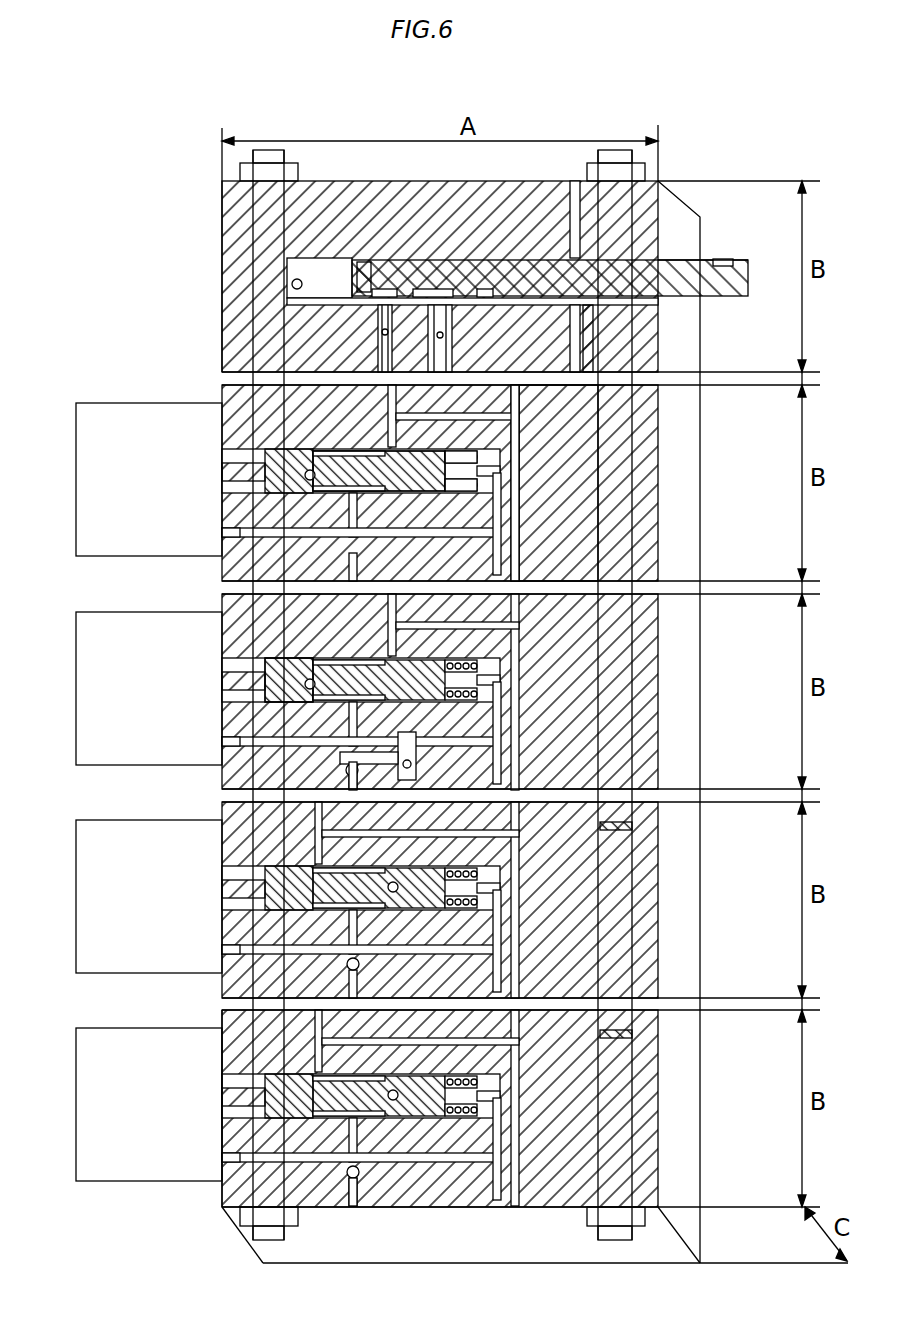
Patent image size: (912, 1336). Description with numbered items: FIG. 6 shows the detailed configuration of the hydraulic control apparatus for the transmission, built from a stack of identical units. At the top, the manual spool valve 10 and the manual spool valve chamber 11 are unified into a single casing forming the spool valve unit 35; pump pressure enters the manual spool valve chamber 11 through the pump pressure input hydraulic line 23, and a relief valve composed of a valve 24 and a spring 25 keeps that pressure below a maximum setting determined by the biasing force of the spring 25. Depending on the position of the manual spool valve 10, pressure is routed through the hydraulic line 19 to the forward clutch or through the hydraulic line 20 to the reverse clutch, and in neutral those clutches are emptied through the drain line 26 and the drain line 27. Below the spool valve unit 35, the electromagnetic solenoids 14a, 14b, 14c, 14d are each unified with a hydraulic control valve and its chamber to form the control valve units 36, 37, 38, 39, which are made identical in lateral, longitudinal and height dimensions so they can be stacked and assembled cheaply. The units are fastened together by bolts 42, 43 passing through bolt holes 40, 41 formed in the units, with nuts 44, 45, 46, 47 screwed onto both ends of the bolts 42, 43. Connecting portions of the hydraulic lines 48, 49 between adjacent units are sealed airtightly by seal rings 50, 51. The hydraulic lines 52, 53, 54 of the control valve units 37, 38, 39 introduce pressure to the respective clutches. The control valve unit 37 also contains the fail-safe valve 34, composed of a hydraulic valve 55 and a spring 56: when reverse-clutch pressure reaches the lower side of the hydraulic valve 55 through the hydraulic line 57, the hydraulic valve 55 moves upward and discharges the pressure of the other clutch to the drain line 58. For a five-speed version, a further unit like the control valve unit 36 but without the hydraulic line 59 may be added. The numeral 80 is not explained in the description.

The manual spool valve 10 is at (748, 283).
The manual spool valve chamber 11 is at (318, 256).
The electromagnetic solenoid 14a is at (100, 548).
The electromagnetic solenoid 14b is at (100, 755).
The electromagnetic solenoid 14c is at (100, 963).
The electromagnetic solenoid 14d is at (102, 1178).
The hydraulic line 19 is at (440, 350).
The hydraulic line 20 is at (428, 332).
The pump pressure input hydraulic line 23 is at (572, 250).
The valve 24 is at (600, 318).
The spring 25 is at (590, 340).
The drain line 26 is at (490, 260).
The drain line 27 is at (388, 260).
The fail-safe valve 34 is at (748, 650).
The spool valve unit 35 is at (236, 305).
The control valve unit 36 is at (215, 565).
The control valve unit 37 is at (215, 770).
The control valve unit 38 is at (215, 985).
The control valve unit 39 is at (218, 1200).
The bolt hole 40 is at (330, 1210).
The bolt hole 41 is at (642, 1207).
The bolt 42 is at (266, 1244).
The bolt 43 is at (620, 1242).
The nut 44 is at (280, 163).
The nut 45 is at (640, 165).
The nut 46 is at (246, 1236).
The nut 47 is at (588, 1226).
The hydraulic line 48 is at (435, 372).
The hydraulic line 49 is at (500, 440).
The seal ring 50 is at (420, 410).
The seal ring 51 is at (605, 392).
The hydraulic line 52 is at (318, 812).
The hydraulic line 53 is at (348, 967).
The hydraulic line 54 is at (352, 1208).
The hydraulic valve 55 is at (560, 702).
The spring 56 is at (520, 705).
The hydraulic line 57 is at (590, 527).
The drain line 58 is at (430, 765).
The hydraulic line 59 is at (470, 462).
The seal 80 is at (635, 826).